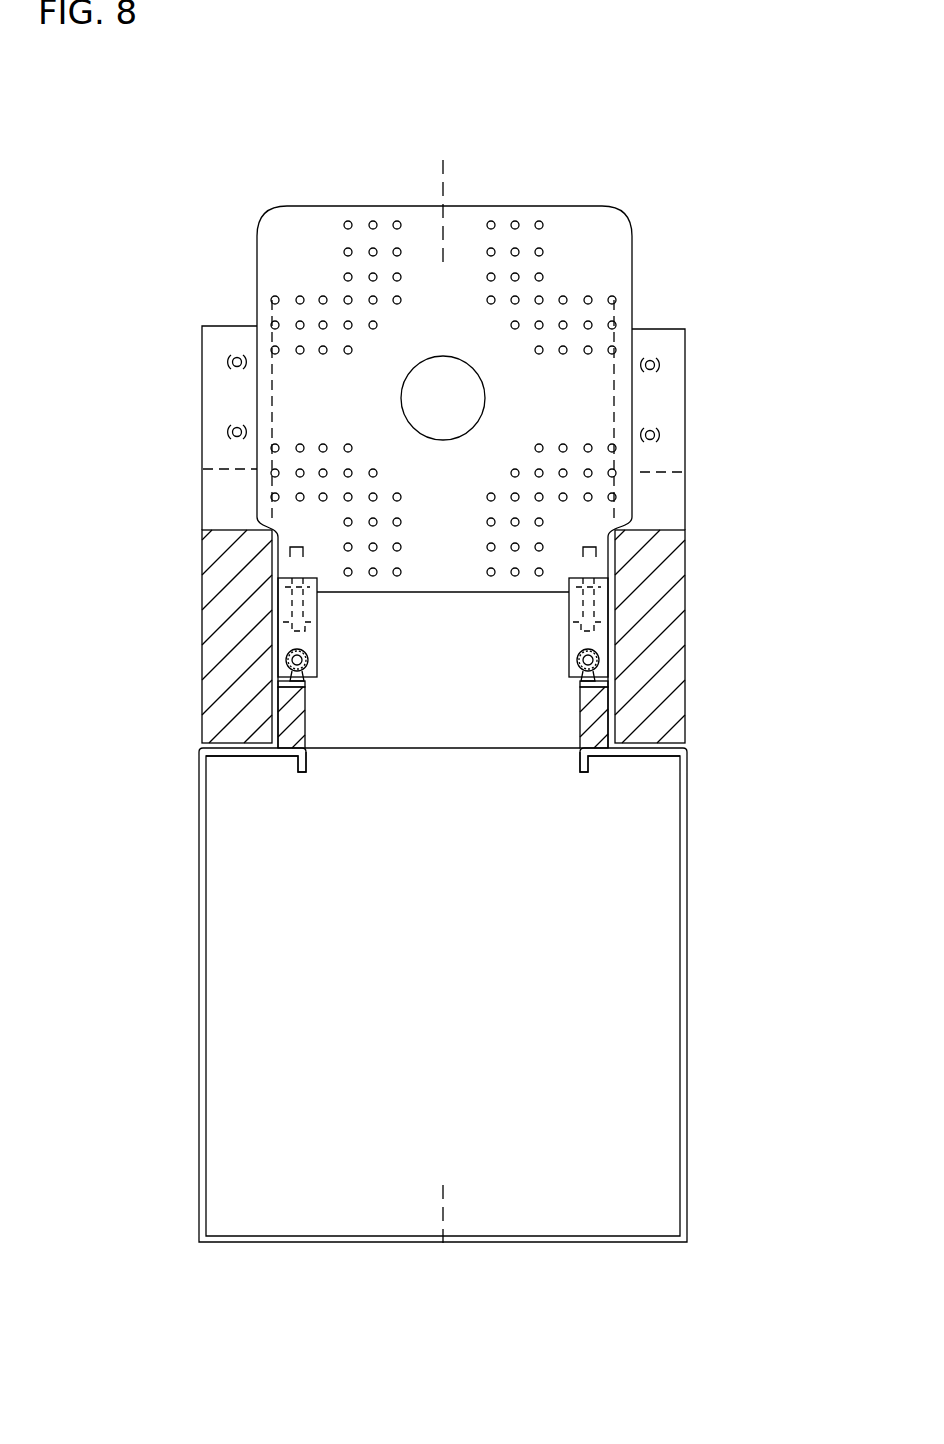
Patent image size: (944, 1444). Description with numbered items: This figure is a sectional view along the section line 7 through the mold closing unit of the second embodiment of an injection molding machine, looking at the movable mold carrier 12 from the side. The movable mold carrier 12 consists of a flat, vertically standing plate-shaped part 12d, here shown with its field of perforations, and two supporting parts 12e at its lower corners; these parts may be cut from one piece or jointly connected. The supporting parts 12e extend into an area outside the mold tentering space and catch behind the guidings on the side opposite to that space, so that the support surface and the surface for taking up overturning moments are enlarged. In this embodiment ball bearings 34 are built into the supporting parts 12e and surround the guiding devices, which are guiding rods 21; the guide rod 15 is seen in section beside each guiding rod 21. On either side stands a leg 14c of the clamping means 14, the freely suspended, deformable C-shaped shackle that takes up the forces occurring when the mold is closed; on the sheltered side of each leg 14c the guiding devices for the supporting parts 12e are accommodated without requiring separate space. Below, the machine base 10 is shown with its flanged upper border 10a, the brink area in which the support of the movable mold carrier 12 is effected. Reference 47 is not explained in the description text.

The section line 7— 7 is at (480, 150).
The machine base 10 is at (491, 1043).
The upper border of the machine base 10a is at (262, 752).
The movable mold carrier 12 is at (623, 196).
The plate-shaped part 12d is at (508, 220).
The supporting parts 12e is at (305, 637).
The clamping means 14 is at (222, 503).
The leg of the clamping means 14c is at (222, 597).
The guide rod 15 is at (292, 715).
The guiding rods 21 is at (305, 686).
The ball bearings 34 is at (308, 662).
The fastener 47 is at (236, 330).